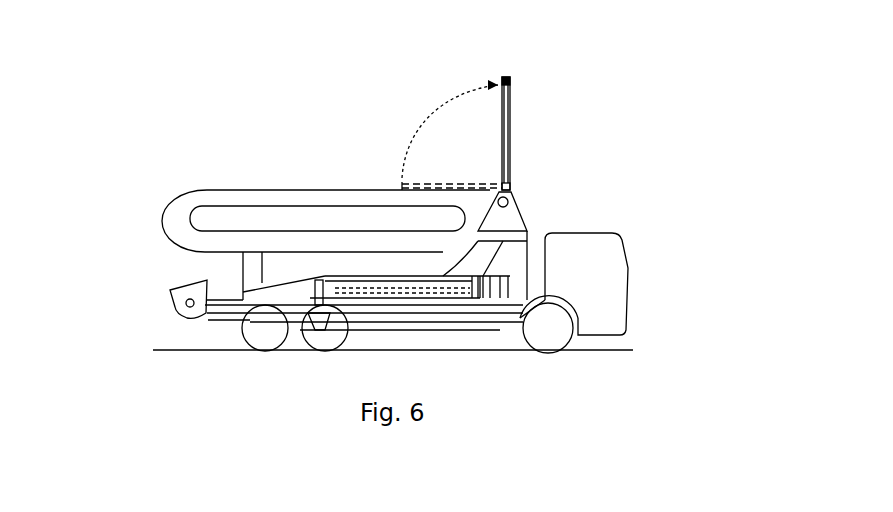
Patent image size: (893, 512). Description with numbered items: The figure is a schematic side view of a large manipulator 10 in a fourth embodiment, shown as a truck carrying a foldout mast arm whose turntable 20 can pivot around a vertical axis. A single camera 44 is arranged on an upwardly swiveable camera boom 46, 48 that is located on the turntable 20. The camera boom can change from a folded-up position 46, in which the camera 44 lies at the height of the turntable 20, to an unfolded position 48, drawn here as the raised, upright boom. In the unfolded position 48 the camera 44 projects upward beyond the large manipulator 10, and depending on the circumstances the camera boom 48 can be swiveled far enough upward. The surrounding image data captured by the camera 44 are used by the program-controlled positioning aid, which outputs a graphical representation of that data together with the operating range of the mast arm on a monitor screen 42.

The large manipulator 10 is at (634, 196).
The turntable 20 is at (518, 225).
The monitor screen 42 is at (597, 293).
The camera 44 is at (510, 82).
The folded-up position of camera boom 46 is at (403, 188).
The unfolded position of camera boom 48 is at (510, 160).